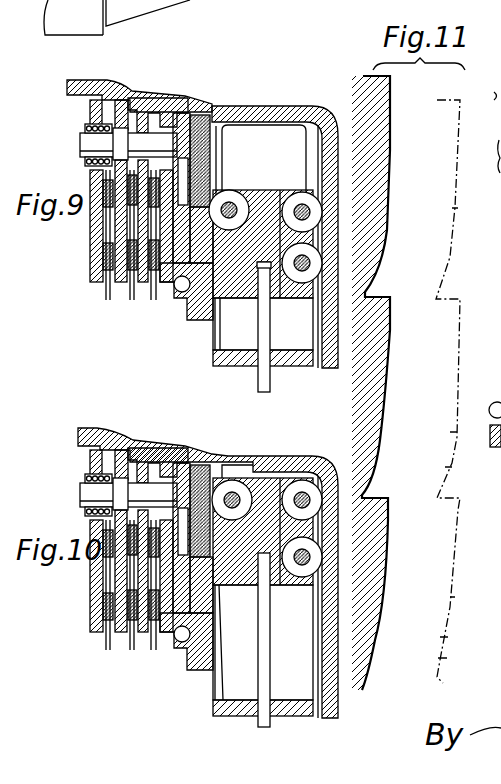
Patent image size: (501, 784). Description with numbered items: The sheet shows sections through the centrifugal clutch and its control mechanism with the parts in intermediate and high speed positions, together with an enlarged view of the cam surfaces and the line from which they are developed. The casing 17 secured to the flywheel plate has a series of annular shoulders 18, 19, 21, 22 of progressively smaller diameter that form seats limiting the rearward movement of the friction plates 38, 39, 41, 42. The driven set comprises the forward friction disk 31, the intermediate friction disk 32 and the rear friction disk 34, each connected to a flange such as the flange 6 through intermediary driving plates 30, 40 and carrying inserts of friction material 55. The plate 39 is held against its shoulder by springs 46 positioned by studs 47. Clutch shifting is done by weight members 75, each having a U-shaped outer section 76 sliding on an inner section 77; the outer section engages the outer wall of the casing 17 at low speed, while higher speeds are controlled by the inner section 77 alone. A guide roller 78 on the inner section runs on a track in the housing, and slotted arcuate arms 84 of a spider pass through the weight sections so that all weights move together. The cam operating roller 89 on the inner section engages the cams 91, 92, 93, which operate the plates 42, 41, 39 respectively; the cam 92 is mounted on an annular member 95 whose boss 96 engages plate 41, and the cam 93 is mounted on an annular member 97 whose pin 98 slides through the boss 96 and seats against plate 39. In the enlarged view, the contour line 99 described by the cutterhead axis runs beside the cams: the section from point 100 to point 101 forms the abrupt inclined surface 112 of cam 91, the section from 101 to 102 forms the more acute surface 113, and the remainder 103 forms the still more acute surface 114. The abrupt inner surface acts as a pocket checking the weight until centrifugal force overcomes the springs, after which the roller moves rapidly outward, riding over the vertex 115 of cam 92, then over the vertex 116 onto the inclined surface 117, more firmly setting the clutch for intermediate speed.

In FIG. 11, the flange 6 is at (497, 397).
In FIG. 9, the casing 17 is at (306, 113).
In FIG. 10, the casing 17 is at (88, 428).
In FIG. 10, the annular shoulder 18 is at (88, 452).
In FIG. 10, the annular shoulder 19 is at (127, 460).
In FIG. 9, the annular shoulder 21 is at (143, 130).
In FIG. 10, the annular shoulder 21 is at (148, 480).
In FIG. 10, the annular shoulder 22 is at (205, 467).
In FIG. 11, the driving plate 30 is at (500, 317).
In FIG. 9, the forward friction disk 31 is at (108, 290).
In FIG. 10, the forward friction disk 31 is at (106, 640).
In FIG. 11, the forward friction disk 31 is at (500, 298).
In FIG. 9, the intermediate friction disk 32 is at (133, 290).
In FIG. 10, the intermediate friction disk 32 is at (131, 640).
In FIG. 11, the intermediate friction disk 32 is at (500, 282).
In FIG. 9, the rear friction disk 34 is at (155, 300).
In FIG. 10, the rear friction disk 34 is at (155, 642).
In FIG. 9, the friction plate 38 is at (90, 268).
In FIG. 10, the friction plate 38 is at (90, 625).
In FIG. 11, the friction plate 38 is at (485, 214).
In FIG. 9, the friction plate 39 is at (120, 287).
In FIG. 10, the friction plate 39 is at (125, 640).
In FIG. 11, the friction plate 39 is at (485, 232).
In FIG. 11, the driving plate 40 is at (500, 332).
In FIG. 9, the friction plate 41 is at (143, 288).
In FIG. 10, the friction plate 41 is at (140, 636).
In FIG. 11, the friction plate 41 is at (500, 250).
In FIG. 9, the friction plate 42 is at (166, 285).
In FIG. 10, the friction plate 42 is at (166, 640).
In FIG. 10, the springs 46 is at (85, 477).
In FIG. 10, the studs 47 is at (80, 492).
In FIG. 10, the friction material inserts 55 is at (98, 550).
In FIG. 9, the weight member 75 is at (279, 127).
In FIG. 10, the weight member 75 is at (276, 467).
In FIG. 9, the outer weight section 76 is at (213, 367).
In FIG. 10, the outer weight section 76 is at (214, 716).
In FIG. 9, the inner weight section 77 is at (280, 300).
In FIG. 10, the inner weight section 77 is at (279, 588).
In FIG. 9, the anti-friction guide roller 78 is at (302, 192).
In FIG. 10, the anti-friction guide roller 78 is at (299, 481).
In FIG. 9, the spider arm 84 is at (258, 373).
In FIG. 10, the spider arm 84 is at (258, 724).
In FIG. 9, the cam operating roller 89 is at (224, 193).
In FIG. 10, the cam operating roller 89 is at (232, 484).
In FIG. 9, the cam 91 is at (216, 300).
In FIG. 10, the cam 91 is at (207, 615).
In FIG. 11, the cam 91 is at (389, 583).
In FIG. 9, the cam 92 is at (219, 290).
In FIG. 10, the cam 92 is at (215, 590).
In FIG. 11, the cam 92 is at (391, 388).
In FIG. 9, the cam 93 is at (220, 163).
In FIG. 10, the cam 93 is at (210, 478).
In FIG. 11, the cam 93 is at (395, 186).
In FIG. 9, the annular member 95 is at (187, 110).
In FIG. 10, the annular member 95 is at (177, 467).
In FIG. 9, the boss 96 is at (157, 127).
In FIG. 10, the boss 96 is at (167, 477).
In FIG. 9, the annular member 97 is at (203, 112).
In FIG. 10, the annular member 97 is at (198, 467).
In FIG. 9, the pin 98 is at (133, 142).
In FIG. 10, the pin 98 is at (112, 480).
In FIG. 11, the contour line 99 is at (462, 581).
In FIG. 11, the point 100 is at (440, 677).
In FIG. 11, the point 101 is at (447, 658).
In FIG. 11, the point 102 is at (450, 634).
In FIG. 11, the contour line remainder 103 is at (455, 600).
In FIG. 9, the inclined surface 112 is at (196, 322).
In FIG. 11, the inclined surface 112 is at (370, 648).
In FIG. 9, the inclined surface 113 is at (206, 320).
In FIG. 11, the inclined surface 113 is at (372, 626).
In FIG. 11, the inclined surface 114 is at (378, 597).
In FIG. 11, the vertex 115 is at (380, 447).
In FIG. 11, the vertex 116 is at (386, 420).
In FIG. 11, the inclined surface 117 is at (388, 360).